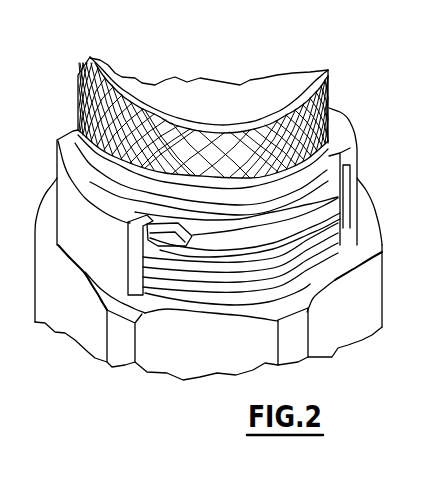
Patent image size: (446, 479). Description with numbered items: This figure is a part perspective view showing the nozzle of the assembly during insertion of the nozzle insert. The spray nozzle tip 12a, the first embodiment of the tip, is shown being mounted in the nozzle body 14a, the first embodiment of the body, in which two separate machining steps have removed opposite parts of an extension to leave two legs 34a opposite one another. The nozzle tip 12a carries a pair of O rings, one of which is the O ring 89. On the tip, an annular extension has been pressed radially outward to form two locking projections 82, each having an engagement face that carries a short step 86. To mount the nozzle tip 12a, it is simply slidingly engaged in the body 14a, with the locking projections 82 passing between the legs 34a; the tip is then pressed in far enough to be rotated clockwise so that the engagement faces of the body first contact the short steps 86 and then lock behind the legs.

The nozzle tip 12a is at (237, 90).
The legs 34a is at (353, 127).
The locking projections 82 is at (287, 218).
The short step 86 is at (147, 237).
The O ring 89 is at (283, 258).
The nozzle body 14a is at (214, 360).